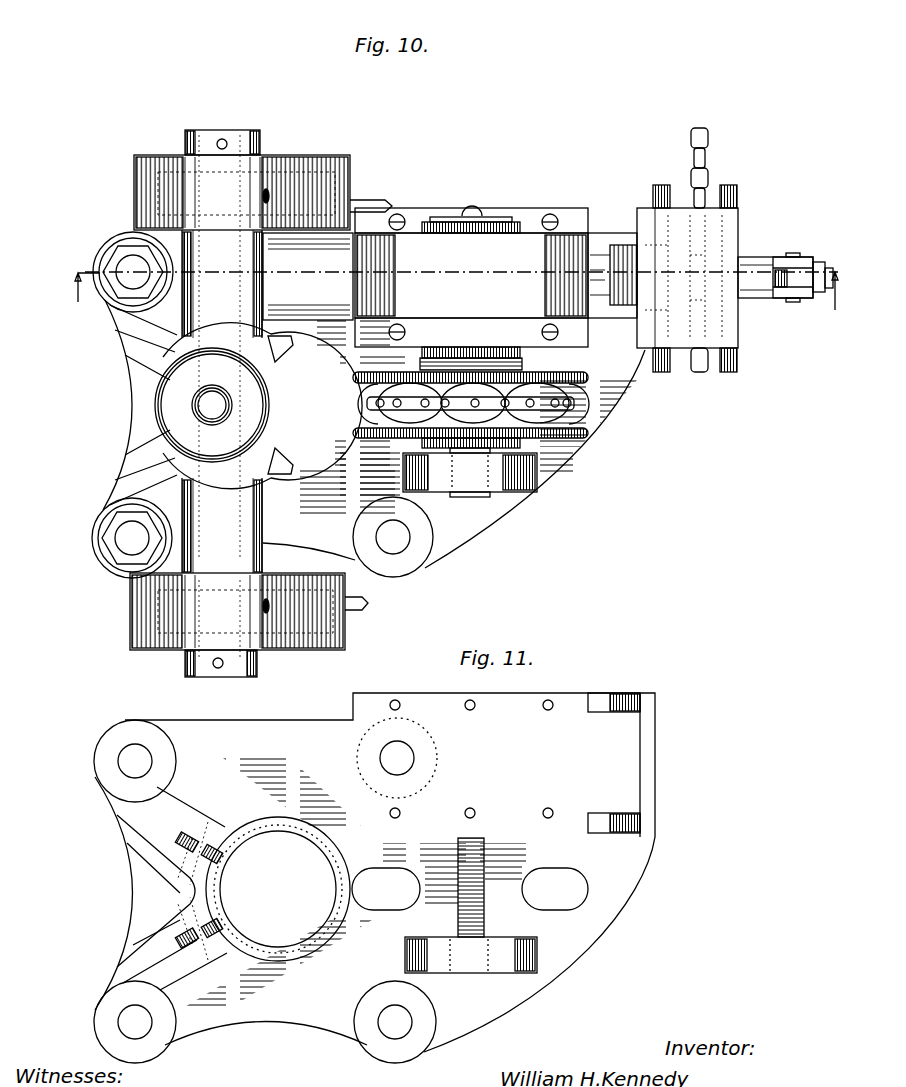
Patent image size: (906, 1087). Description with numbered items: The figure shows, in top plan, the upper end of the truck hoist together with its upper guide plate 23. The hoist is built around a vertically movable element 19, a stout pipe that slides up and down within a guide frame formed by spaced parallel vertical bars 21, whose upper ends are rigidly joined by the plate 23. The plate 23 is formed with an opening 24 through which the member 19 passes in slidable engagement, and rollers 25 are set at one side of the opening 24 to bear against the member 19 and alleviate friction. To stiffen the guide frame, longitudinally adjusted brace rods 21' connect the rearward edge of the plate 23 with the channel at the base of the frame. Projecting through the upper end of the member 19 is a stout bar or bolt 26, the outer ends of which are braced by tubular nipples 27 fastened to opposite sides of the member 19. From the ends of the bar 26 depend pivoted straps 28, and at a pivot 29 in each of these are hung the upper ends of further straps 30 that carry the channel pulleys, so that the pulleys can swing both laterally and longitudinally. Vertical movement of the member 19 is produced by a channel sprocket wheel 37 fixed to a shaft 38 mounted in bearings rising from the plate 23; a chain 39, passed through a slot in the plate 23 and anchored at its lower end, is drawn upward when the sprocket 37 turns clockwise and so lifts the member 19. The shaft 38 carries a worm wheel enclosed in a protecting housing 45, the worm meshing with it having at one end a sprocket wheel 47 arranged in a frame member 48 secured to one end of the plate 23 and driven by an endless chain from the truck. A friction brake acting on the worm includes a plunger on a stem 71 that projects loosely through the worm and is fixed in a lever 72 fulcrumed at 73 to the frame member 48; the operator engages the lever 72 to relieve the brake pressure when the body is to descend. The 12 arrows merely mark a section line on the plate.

In FIG. 10, the section line 12 is at (439, 294).
In FIG. 10, the vertically movable element 19 is at (272, 413).
In FIG. 10, the bars 21 is at (262, 416).
In FIG. 10, the brace rods 21' is at (380, 397).
In FIG. 10, the plate 23 is at (618, 372).
In FIG. 11, the plate 23 is at (620, 878).
In FIG. 11, the opening 24 is at (313, 852).
In FIG. 11, the rollers 25 is at (213, 923).
In FIG. 10, the bar or bolt 26 is at (228, 131).
In FIG. 10, the tubular nipples 27 is at (258, 305).
In FIG. 10, the straps 28 is at (207, 192).
In FIG. 10, the pivot 29 is at (267, 193).
In FIG. 10, the straps 30 is at (350, 162).
In FIG. 10, the channel sprocket wheel 37 is at (533, 440).
In FIG. 10, the shaft 38 is at (470, 224).
In FIG. 10, the chain 39 is at (560, 406).
In FIG. 10, the housing 45 is at (485, 255).
In FIG. 10, the sprocket wheel 47 is at (709, 166).
In FIG. 10, the frame member 48 is at (740, 224).
In FIG. 10, the stem 71 is at (822, 266).
In FIG. 10, the lever 72 is at (795, 300).
In FIG. 10, the fulcrum 73 is at (793, 256).